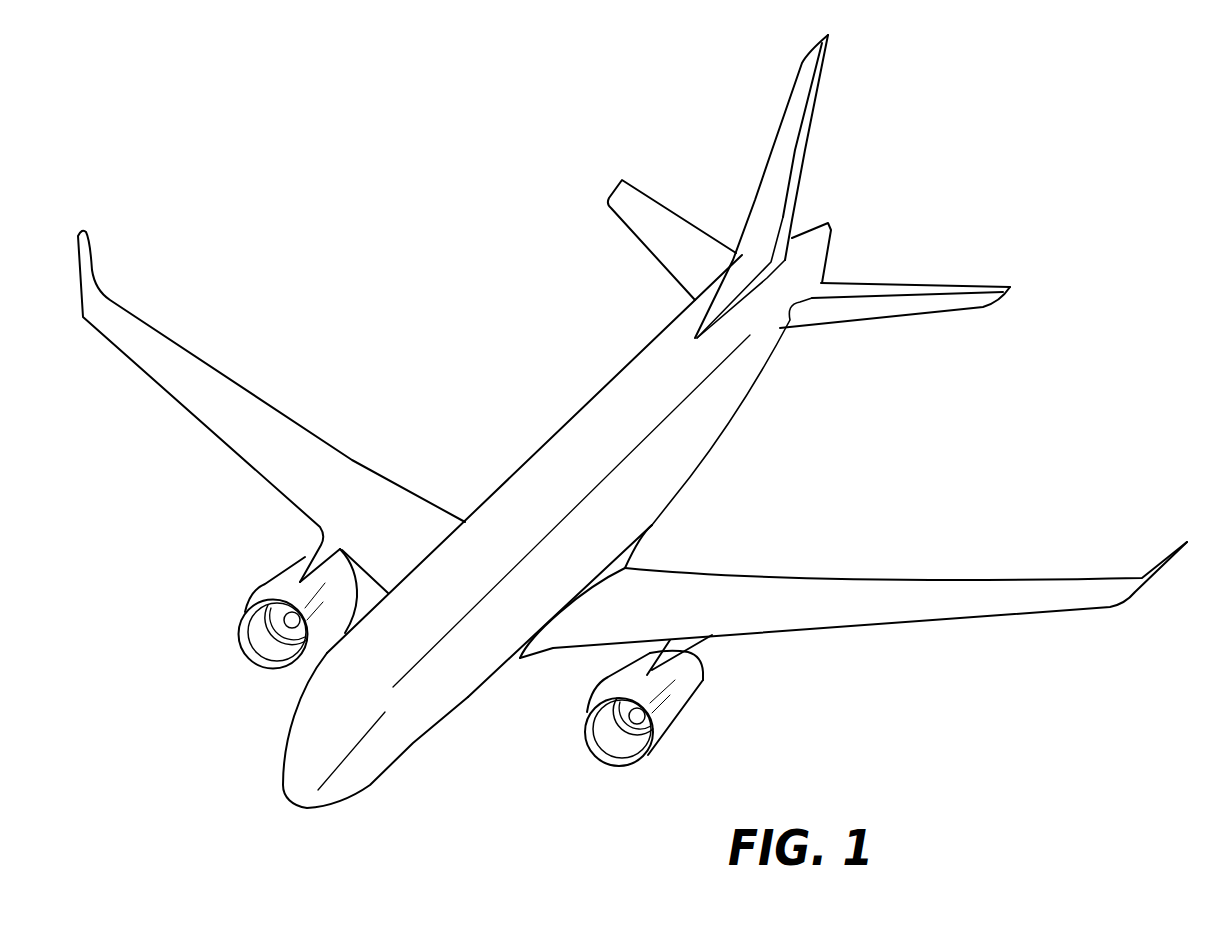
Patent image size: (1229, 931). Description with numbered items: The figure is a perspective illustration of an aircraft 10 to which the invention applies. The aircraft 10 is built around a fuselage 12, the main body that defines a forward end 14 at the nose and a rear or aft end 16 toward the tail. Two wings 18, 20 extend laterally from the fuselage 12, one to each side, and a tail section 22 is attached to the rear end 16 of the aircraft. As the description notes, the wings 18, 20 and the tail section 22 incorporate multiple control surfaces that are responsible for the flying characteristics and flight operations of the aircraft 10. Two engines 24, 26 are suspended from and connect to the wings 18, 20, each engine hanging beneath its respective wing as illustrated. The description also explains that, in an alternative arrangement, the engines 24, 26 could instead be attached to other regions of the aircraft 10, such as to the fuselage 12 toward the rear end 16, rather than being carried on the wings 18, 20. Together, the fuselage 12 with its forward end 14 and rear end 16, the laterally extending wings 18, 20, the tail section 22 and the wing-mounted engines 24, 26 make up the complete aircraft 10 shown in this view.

The aircraft 10 is at (1108, 327).
The fuselage 12 is at (700, 450).
The forward end 14 is at (292, 797).
The rear end 16 is at (830, 226).
The wing 18 is at (824, 589).
The wing 20 is at (297, 433).
The tail section 22 is at (793, 178).
The engine 24 is at (678, 710).
The engine 26 is at (278, 592).